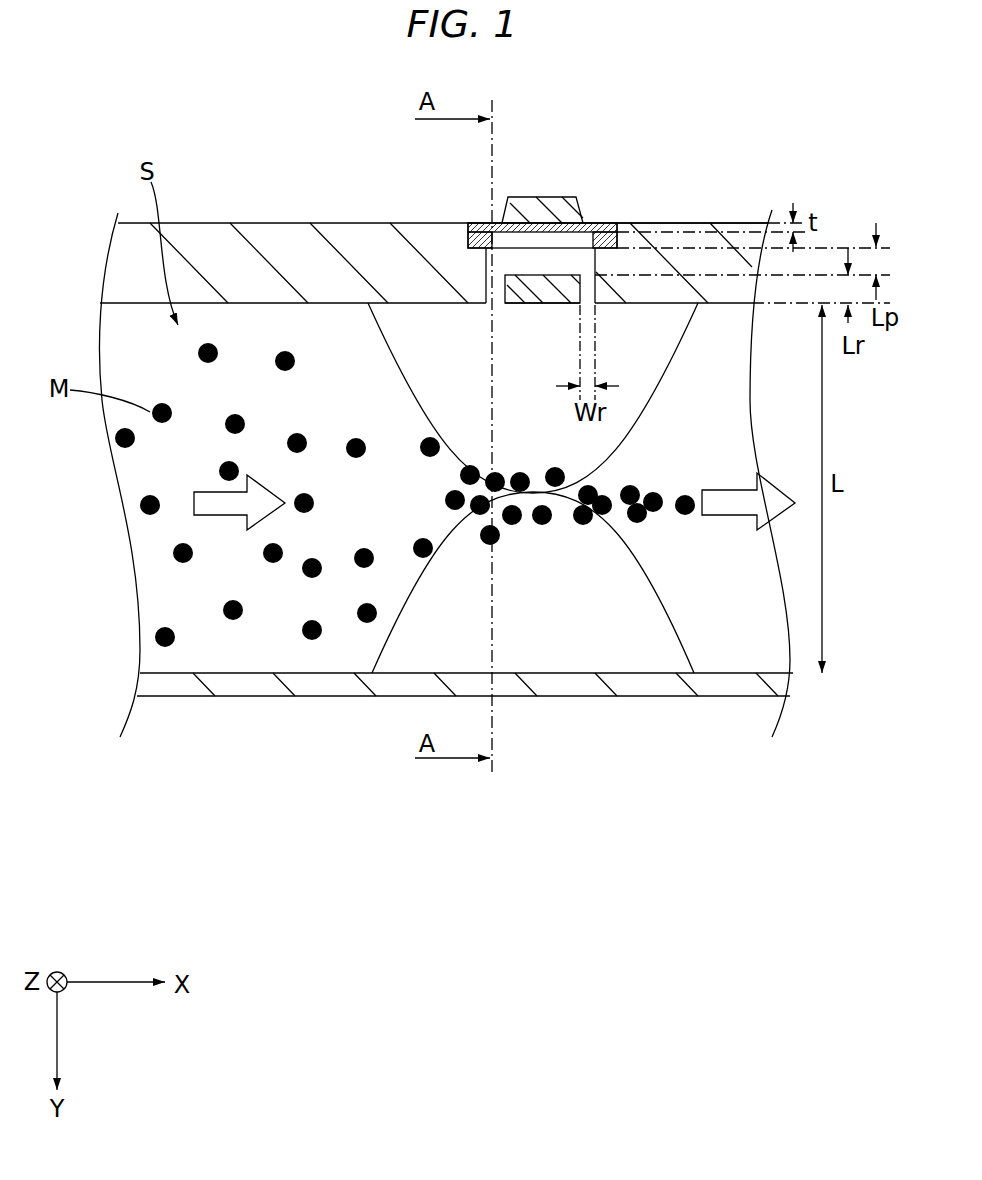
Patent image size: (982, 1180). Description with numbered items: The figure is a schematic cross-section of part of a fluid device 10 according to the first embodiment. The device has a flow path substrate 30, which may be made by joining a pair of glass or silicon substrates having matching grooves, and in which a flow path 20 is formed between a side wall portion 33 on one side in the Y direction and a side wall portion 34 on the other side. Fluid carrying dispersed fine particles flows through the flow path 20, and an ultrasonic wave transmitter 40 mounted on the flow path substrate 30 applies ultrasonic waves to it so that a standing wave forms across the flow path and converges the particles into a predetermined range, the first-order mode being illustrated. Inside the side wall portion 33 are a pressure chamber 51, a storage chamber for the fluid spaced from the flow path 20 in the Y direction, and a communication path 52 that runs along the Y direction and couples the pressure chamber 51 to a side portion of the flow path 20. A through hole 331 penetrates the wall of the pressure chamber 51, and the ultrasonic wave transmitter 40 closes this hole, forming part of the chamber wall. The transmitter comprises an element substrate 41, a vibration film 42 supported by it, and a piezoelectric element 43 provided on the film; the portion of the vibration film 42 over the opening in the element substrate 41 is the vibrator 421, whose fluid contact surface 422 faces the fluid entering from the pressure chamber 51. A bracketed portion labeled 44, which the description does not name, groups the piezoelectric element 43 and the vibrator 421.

The fluid device 10 is at (104, 144).
The flow path 20 is at (278, 303).
The flow path substrate 30 is at (434, 211).
The side wall portion 33 is at (383, 232).
The through hole 331 is at (484, 226).
The side wall portion 34 is at (698, 694).
The ultrasonic wave transmitter 40 is at (555, 226).
The element substrate 41 is at (643, 223).
The vibration film 42 is at (605, 223).
The vibrator 421 is at (590, 223).
The fluid contact surface 422 is at (534, 292).
The piezoelectric element 43 is at (547, 205).
The sensor assembly 44 is at (546, 163).
The pressure chamber 51 is at (596, 258).
The communication path 52 is at (487, 305).